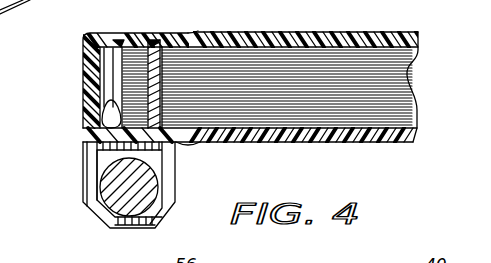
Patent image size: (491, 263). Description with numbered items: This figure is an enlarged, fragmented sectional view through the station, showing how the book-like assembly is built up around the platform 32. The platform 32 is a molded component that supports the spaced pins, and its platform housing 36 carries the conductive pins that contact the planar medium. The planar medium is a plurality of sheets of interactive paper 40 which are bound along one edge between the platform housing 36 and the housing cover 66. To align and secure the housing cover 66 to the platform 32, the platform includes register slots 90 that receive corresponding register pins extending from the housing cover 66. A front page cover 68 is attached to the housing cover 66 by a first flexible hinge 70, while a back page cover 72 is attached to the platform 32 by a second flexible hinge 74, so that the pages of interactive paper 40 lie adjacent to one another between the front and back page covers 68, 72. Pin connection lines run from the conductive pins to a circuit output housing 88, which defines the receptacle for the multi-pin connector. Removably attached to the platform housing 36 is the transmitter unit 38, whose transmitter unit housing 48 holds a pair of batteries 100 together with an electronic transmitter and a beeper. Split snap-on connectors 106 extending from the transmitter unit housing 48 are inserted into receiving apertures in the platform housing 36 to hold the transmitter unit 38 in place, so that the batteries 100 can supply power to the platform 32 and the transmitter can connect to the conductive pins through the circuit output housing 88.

The platform 32 is at (78, 130).
The platform housing 36 is at (84, 74).
The transmitter unit 38 is at (86, 217).
The interactive paper 40 is at (367, 117).
The transmitter unit housing 48 is at (86, 177).
The housing cover 66 is at (104, 34).
The front page cover 68 is at (331, 32).
The first flexible hinge 70 is at (198, 32).
The back page cover 72 is at (303, 144).
The second flexible hinge 74 is at (202, 143).
The circuit output housing 88 is at (113, 55).
The register slots 90 is at (103, 61).
The batteries 100 is at (168, 199).
The split snap-on connectors 106 is at (97, 106).